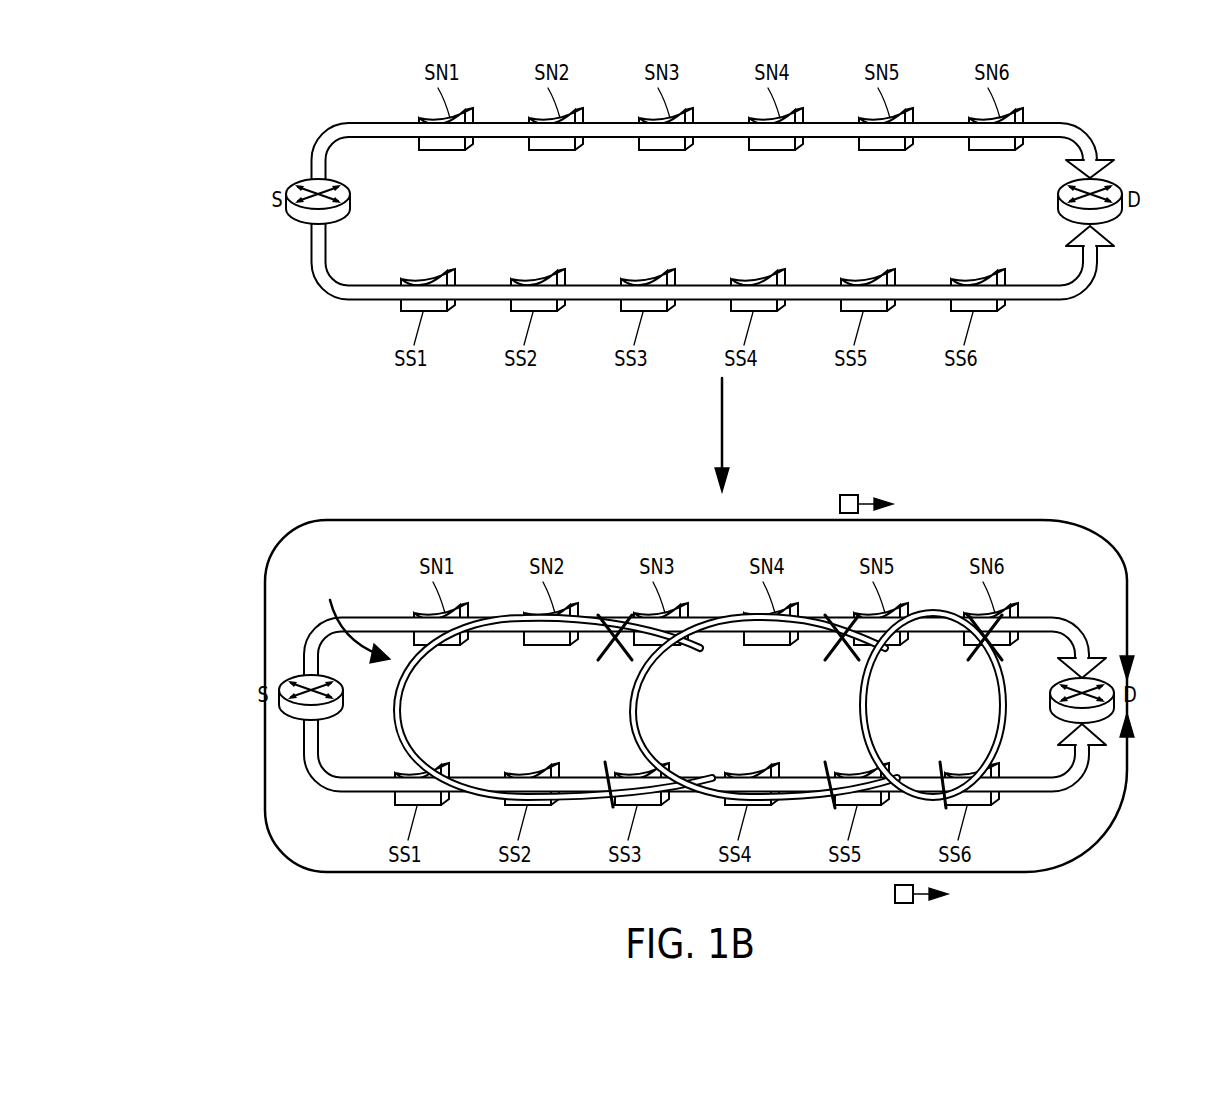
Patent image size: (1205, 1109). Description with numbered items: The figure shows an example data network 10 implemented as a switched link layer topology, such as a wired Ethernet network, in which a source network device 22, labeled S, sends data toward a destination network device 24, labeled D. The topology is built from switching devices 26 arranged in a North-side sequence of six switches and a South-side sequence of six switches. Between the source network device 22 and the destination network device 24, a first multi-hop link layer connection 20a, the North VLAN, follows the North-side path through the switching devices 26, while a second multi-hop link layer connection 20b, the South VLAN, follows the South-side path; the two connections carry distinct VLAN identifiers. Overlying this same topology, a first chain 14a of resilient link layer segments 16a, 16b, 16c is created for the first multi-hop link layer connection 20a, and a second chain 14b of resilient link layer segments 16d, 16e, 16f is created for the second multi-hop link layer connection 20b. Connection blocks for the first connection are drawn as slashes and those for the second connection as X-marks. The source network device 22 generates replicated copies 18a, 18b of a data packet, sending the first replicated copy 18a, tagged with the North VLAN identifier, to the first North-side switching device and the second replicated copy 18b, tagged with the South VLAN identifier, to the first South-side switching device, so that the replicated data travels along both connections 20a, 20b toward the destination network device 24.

The data network 10 is at (1122, 132).
The first chain 14a is at (344, 620).
The second chain 14b is at (360, 631).
The resilient link layer segment 16a is at (554, 707).
The resilient link layer segment 16b is at (765, 707).
The resilient link layer segment 16c is at (933, 705).
The resilient link layer segment 16d is at (412, 705).
The resilient link layer segment 16e is at (648, 705).
The resilient link layer segment 16f is at (875, 705).
The first replicated copy 18a is at (846, 494).
The second replicated copy 18b is at (901, 904).
The first multi-hop link layer connection 20a is at (548, 518).
The second multi-hop link layer connection 20b is at (1063, 302).
The source network device 22 is at (351, 197).
The destination network device 24 is at (1058, 201).
The switching device 26 is at (545, 153).